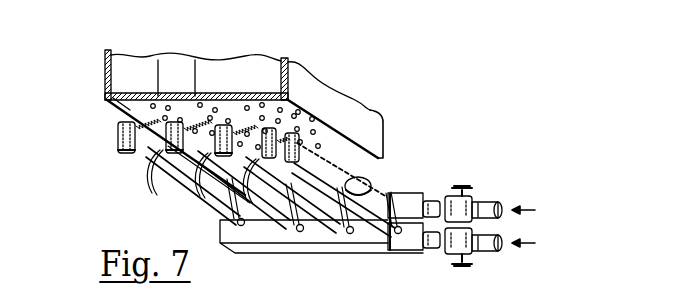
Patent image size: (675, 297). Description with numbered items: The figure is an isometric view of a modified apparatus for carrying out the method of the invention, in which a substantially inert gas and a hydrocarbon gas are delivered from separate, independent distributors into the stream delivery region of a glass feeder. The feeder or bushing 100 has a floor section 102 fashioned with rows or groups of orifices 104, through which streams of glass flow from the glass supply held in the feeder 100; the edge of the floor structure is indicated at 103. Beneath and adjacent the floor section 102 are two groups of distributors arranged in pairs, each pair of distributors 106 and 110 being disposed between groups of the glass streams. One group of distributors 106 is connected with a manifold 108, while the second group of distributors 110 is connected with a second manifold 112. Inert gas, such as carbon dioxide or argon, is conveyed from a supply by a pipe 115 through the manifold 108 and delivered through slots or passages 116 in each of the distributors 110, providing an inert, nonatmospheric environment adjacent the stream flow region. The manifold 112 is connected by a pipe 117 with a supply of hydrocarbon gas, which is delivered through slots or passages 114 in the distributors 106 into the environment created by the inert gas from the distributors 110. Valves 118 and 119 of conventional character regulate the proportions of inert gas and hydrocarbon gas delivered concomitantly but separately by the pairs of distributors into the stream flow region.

The feeder 100 is at (307, 66).
The floor section 102 is at (172, 95).
The plate edge 103 is at (120, 107).
The orifices 104 is at (157, 95).
The distributors 106 is at (141, 158).
The manifold 108 is at (440, 196).
The distributors 110 is at (290, 99).
The second manifold 112 is at (262, 250).
The slots or passages 114 is at (158, 142).
The pipe 115 is at (447, 197).
The slots or passages 116 is at (307, 150).
The pipe 117 is at (440, 248).
The valve 118 is at (473, 200).
The valve 119 is at (470, 266).